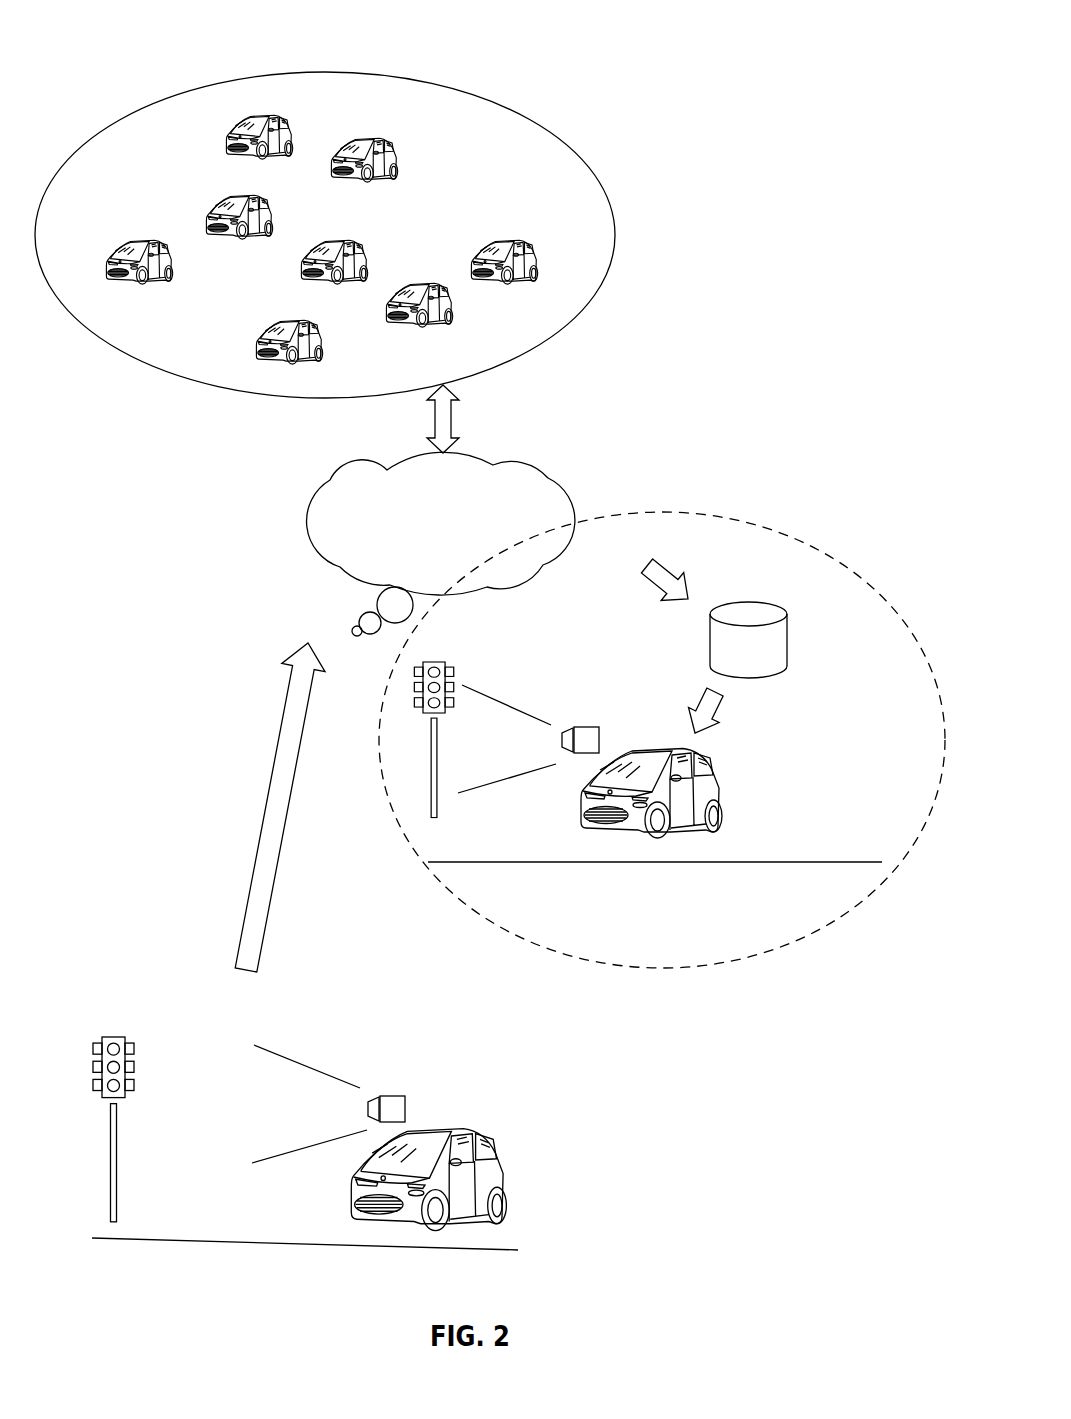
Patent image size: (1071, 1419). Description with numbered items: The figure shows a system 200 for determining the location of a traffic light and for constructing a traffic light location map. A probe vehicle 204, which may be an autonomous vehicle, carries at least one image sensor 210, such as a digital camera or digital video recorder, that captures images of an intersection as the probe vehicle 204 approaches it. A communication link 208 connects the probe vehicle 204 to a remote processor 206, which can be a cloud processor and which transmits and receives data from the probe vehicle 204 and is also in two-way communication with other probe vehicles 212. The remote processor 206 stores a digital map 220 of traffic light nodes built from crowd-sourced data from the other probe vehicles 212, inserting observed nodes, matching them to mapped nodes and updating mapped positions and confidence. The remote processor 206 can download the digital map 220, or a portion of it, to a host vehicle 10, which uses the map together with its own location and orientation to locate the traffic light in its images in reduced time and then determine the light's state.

The system 200 is at (128, 44).
The other probe vehicles 212 is at (163, 102).
The remote processor 206 is at (535, 463).
The communication link 208 is at (253, 863).
The digital map 220 is at (788, 640).
The host vehicle 10 is at (720, 788).
The image sensor 210 is at (392, 1105).
The probe vehicle 204 is at (508, 1178).